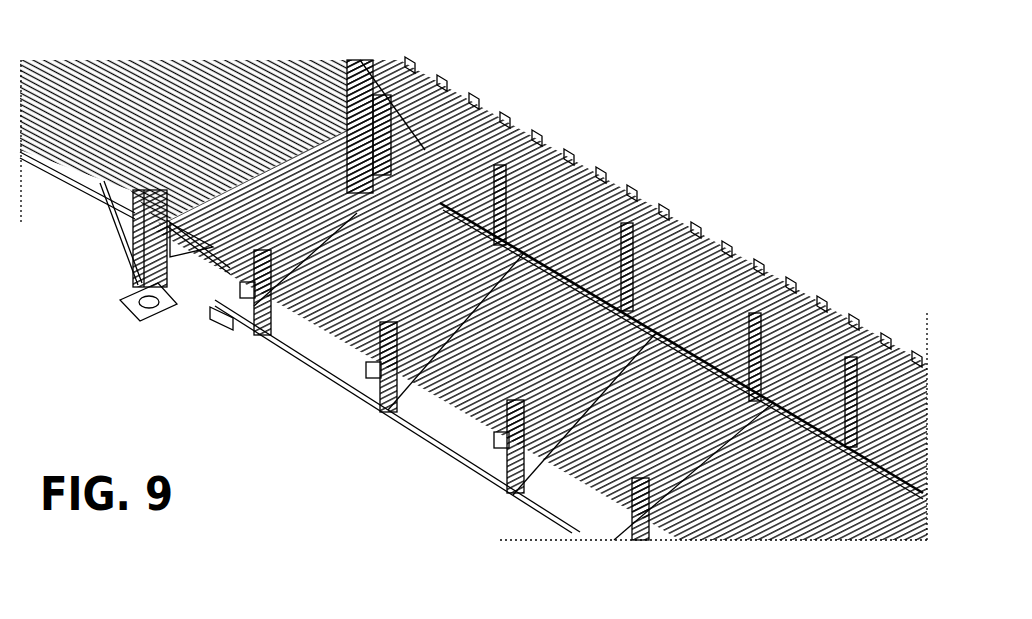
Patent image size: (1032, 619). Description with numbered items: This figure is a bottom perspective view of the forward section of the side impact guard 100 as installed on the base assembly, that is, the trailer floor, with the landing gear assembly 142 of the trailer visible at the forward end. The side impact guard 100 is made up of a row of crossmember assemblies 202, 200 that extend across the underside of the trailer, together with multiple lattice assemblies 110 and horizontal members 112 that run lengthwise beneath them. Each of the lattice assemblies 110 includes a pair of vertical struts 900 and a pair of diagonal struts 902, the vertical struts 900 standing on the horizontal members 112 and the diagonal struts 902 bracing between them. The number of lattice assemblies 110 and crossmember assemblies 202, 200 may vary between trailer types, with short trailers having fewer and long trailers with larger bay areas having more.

The side impact guard 100 is at (795, 97).
The lattice assemblies 110 is at (226, 422).
The horizontal members 112 is at (448, 460).
The landing gear assembly 142 is at (116, 288).
The crossmember assembly 200 is at (545, 130).
The crossmember assembly 202 is at (577, 153).
The vertical struts 900 is at (455, 228).
The diagonal struts 902 is at (455, 220).